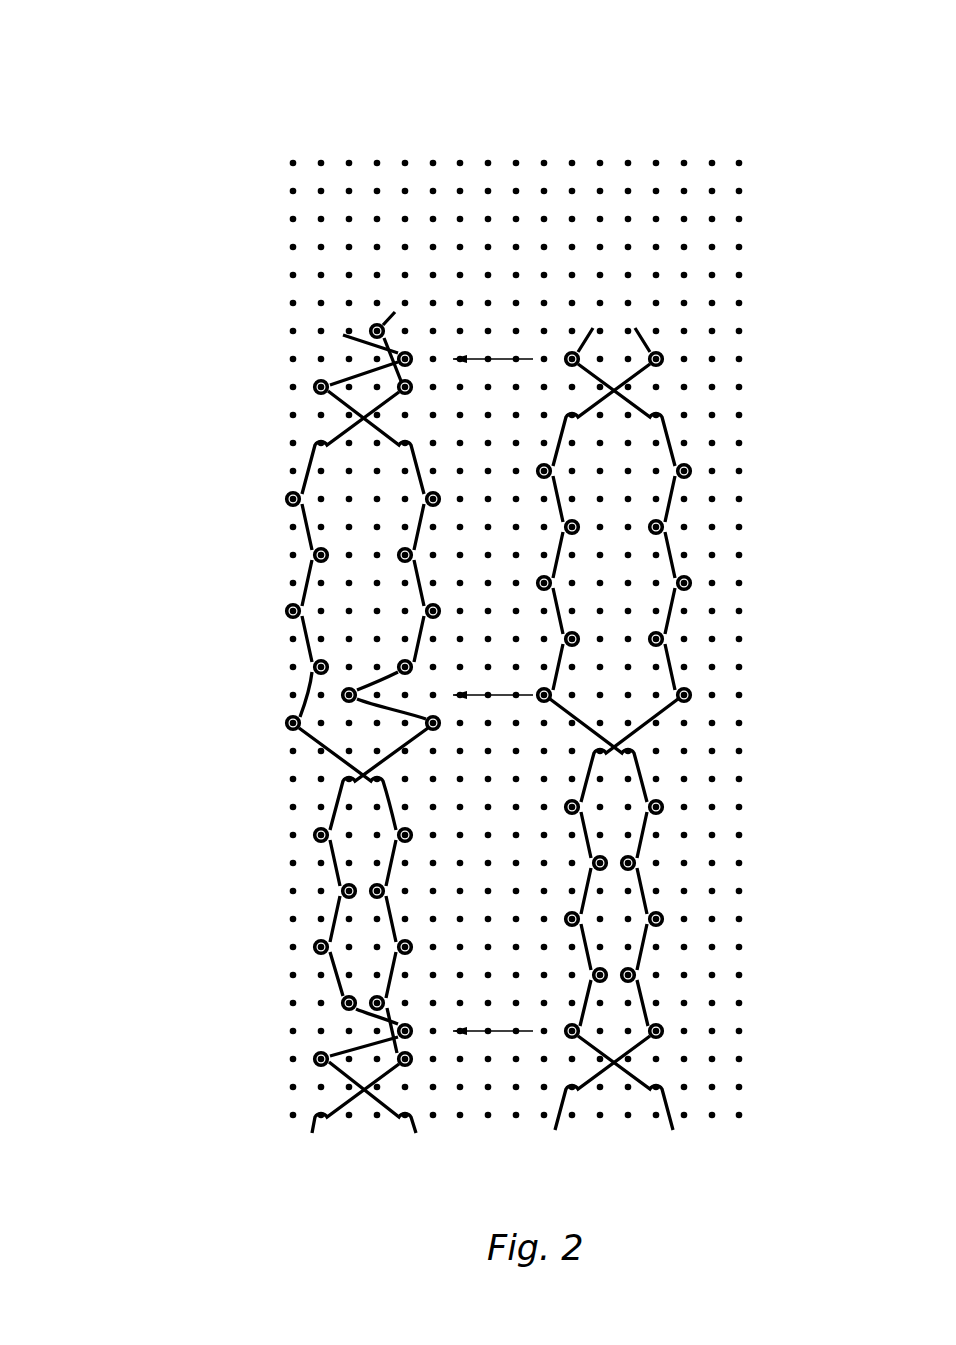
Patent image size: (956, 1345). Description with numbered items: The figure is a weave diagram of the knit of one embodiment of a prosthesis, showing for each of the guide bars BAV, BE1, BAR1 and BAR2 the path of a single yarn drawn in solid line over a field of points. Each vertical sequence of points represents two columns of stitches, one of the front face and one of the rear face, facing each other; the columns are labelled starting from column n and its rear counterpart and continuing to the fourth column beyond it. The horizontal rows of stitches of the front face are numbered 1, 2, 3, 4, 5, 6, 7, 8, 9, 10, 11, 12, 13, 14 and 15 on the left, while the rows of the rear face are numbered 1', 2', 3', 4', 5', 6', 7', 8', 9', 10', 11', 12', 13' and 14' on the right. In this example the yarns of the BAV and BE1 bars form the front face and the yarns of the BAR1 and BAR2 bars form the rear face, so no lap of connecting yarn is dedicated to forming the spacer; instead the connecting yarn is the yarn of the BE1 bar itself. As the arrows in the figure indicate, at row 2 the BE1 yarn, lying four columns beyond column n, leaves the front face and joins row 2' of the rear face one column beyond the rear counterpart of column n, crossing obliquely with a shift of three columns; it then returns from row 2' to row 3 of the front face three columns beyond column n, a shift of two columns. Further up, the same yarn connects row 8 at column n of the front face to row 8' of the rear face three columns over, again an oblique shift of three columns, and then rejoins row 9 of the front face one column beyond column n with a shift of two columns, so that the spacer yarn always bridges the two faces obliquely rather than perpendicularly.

The column n is at (438, 152).
The BAV bar BAV is at (339, 738).
The BE1 bar BE1 is at (379, 750).
The BAR1 bar BAR1 is at (594, 746).
The BAR2 bar BAR2 is at (643, 746).
The row 1 is at (506, 1114).
The row 2 is at (505, 1058).
The row 3 is at (505, 1002).
The row 4 is at (505, 946).
The row 5 is at (505, 890).
The row 6 is at (505, 834).
The row 7 is at (505, 778).
The row 8 is at (505, 722).
The row 9 is at (505, 666).
The row 10 is at (500, 610).
The row 11 is at (501, 554).
The row 12 is at (500, 498).
The row 13 is at (500, 442).
The row 14 is at (500, 386).
The row 15 is at (500, 330).
The row 1' is at (516, 1086).
The row 2' is at (516, 1030).
The row 3' is at (516, 974).
The row 4' is at (516, 918).
The row 5' is at (516, 862).
The row 6' is at (516, 806).
The row 7' is at (516, 750).
The row 8' is at (516, 694).
The row 9' is at (516, 638).
The row 10' is at (516, 582).
The row 11' is at (516, 526).
The row 12' is at (516, 470).
The row 13' is at (516, 414).
The row 14' is at (516, 358).